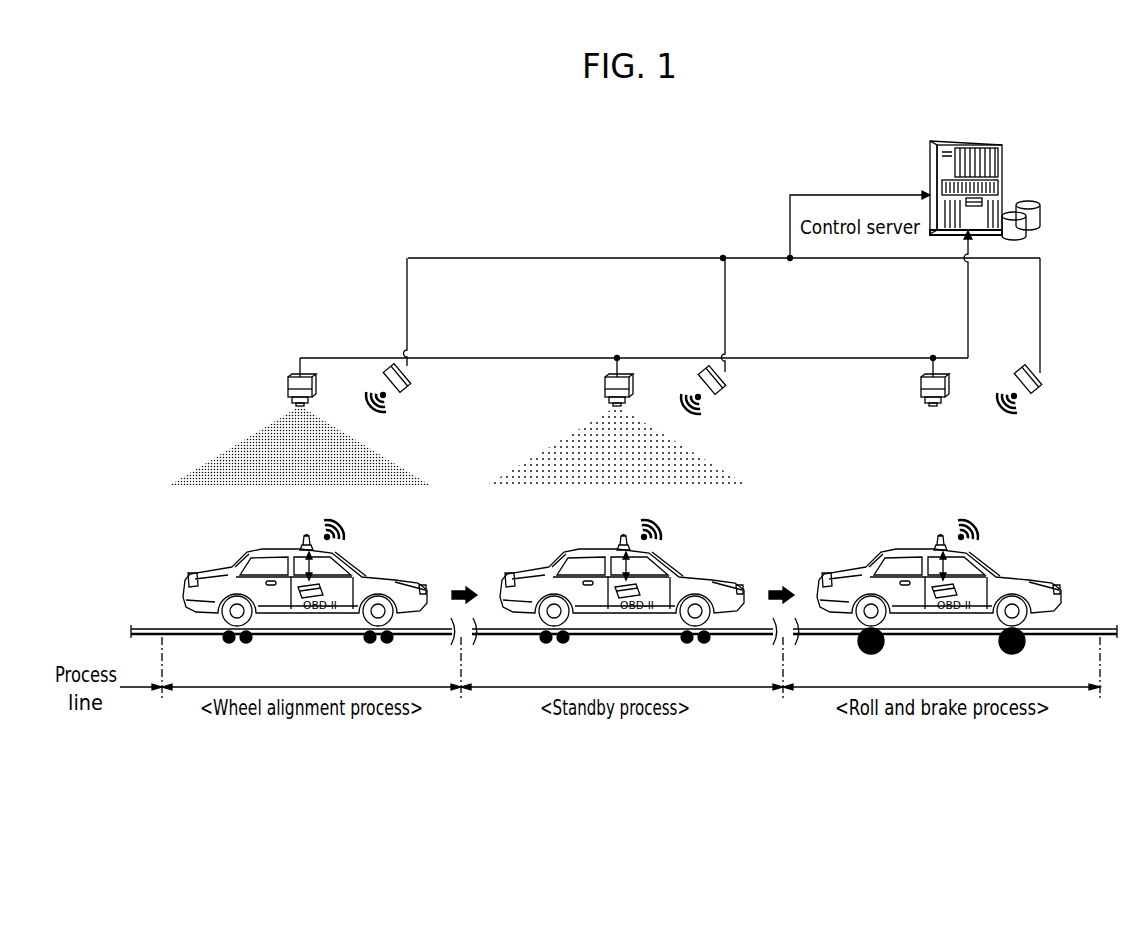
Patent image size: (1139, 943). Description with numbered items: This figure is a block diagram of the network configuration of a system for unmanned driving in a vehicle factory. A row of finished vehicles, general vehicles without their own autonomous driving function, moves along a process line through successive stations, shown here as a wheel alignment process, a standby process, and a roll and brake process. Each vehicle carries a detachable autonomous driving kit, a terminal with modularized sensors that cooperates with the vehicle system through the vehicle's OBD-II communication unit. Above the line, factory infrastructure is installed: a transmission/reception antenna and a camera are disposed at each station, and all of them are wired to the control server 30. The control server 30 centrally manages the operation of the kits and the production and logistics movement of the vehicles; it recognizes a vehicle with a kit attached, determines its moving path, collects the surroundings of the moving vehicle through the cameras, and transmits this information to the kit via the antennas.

The control server 30 is at (980, 141).